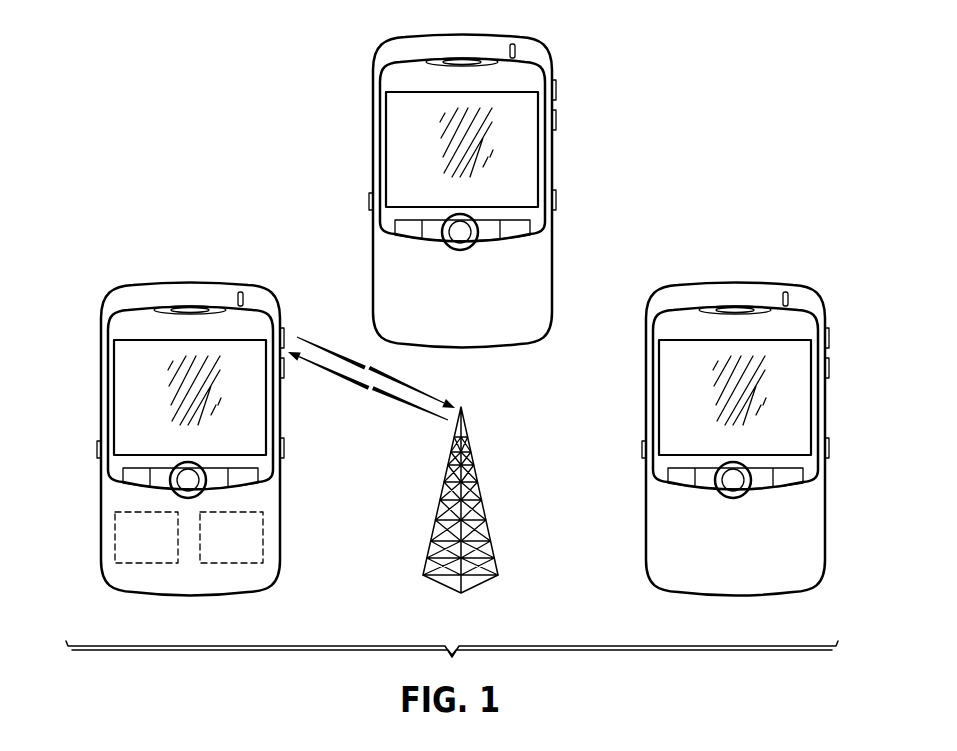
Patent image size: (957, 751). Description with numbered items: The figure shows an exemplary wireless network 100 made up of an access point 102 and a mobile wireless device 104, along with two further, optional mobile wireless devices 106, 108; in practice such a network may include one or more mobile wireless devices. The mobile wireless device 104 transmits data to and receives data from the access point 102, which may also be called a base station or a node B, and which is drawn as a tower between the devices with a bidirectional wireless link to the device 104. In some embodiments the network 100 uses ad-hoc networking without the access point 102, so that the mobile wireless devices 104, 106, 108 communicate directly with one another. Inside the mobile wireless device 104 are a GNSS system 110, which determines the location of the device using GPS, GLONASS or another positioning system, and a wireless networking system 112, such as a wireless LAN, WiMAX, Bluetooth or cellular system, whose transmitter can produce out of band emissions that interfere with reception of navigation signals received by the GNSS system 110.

The wireless network 100 is at (767, 99).
The access point 102 is at (440, 582).
The mobile wireless device 104 is at (153, 439).
The mobile wireless device 106 is at (553, 159).
The mobile wireless device 108 is at (826, 494).
The GNSS system 110 is at (167, 551).
The wireless networking system 112 is at (252, 551).